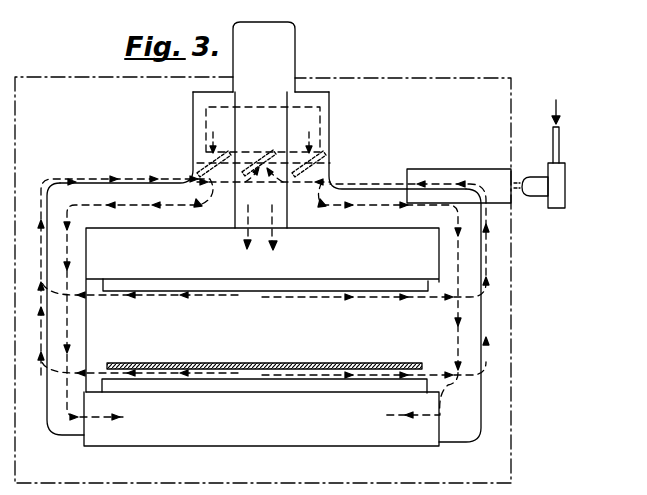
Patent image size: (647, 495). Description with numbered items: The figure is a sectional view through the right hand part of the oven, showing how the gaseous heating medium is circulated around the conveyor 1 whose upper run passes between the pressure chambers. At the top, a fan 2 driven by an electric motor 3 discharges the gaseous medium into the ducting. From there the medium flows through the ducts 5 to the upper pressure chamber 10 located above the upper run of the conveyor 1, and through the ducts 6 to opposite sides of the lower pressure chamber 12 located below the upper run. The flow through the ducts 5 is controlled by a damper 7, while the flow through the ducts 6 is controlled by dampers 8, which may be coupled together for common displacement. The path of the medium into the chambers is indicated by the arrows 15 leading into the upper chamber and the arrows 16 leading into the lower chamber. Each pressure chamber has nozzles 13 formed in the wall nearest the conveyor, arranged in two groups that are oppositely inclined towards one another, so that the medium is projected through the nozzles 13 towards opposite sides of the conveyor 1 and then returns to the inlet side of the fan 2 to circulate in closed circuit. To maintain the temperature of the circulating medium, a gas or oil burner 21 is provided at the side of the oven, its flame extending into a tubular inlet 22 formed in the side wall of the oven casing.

The conveyor 1 is at (232, 364).
The fan 2 is at (275, 110).
The electric motor 3 is at (291, 31).
The ducts 5 is at (277, 212).
The ducts 6 is at (468, 348).
The damper 7 is at (270, 152).
The dampers 8 is at (197, 158).
The upper pressure chamber 10 is at (428, 258).
The lower pressure chamber 12 is at (428, 409).
The nozzles 13 is at (238, 280).
The arrows 15 is at (246, 236).
The arrows 16 is at (72, 259).
The gas or oil burner 21 is at (536, 176).
The tubular inlet 22 is at (455, 174).